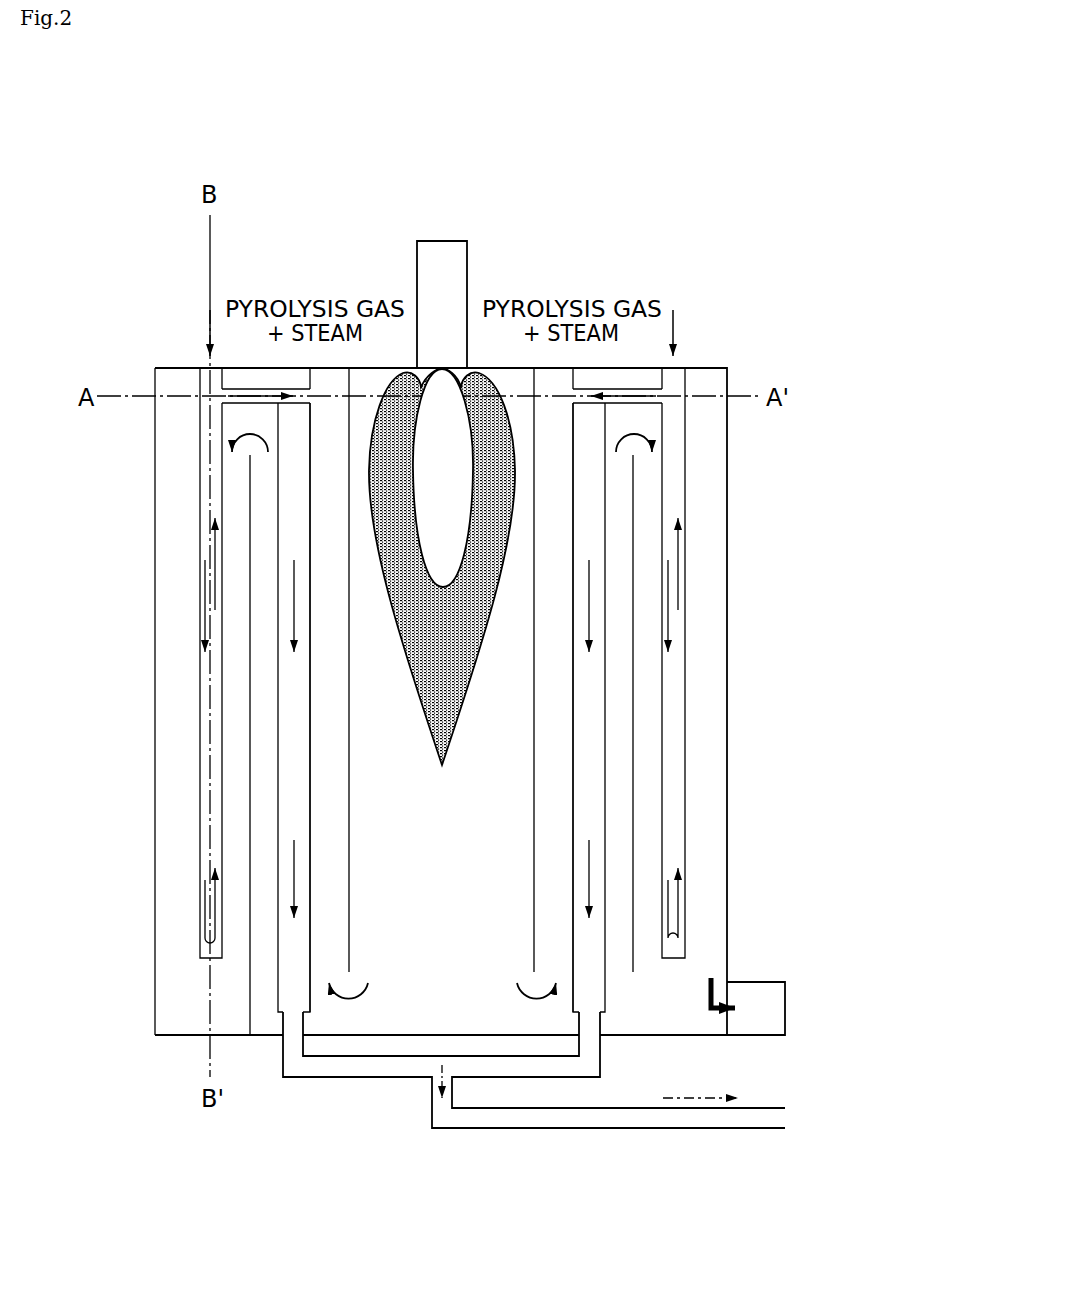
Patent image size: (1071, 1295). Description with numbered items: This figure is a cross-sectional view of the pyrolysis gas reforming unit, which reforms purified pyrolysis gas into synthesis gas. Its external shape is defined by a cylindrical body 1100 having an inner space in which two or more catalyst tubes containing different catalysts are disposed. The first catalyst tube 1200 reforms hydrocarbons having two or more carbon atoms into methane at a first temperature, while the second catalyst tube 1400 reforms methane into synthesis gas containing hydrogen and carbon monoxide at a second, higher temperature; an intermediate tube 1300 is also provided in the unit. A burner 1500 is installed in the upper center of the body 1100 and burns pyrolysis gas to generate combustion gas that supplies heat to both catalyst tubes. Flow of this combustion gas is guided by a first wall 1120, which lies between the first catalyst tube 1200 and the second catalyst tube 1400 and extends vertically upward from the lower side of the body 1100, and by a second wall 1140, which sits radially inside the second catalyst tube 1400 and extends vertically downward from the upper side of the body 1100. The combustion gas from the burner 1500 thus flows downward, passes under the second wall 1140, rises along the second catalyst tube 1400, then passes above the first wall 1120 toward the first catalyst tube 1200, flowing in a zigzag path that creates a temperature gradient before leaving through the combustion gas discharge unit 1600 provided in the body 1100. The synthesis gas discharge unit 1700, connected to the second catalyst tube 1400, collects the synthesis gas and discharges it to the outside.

The body 1100 is at (733, 553).
The first wall 1120 is at (250, 797).
The second wall 1140 is at (349, 607).
The first catalyst tube 1200 is at (675, 680).
The intermediate tube 1300 is at (230, 404).
The second catalyst tube 1400 is at (278, 694).
The burner 1500 is at (416, 232).
The combustion gas discharge unit 1600 is at (787, 978).
The synthesis gas discharge unit 1700 is at (420, 1119).